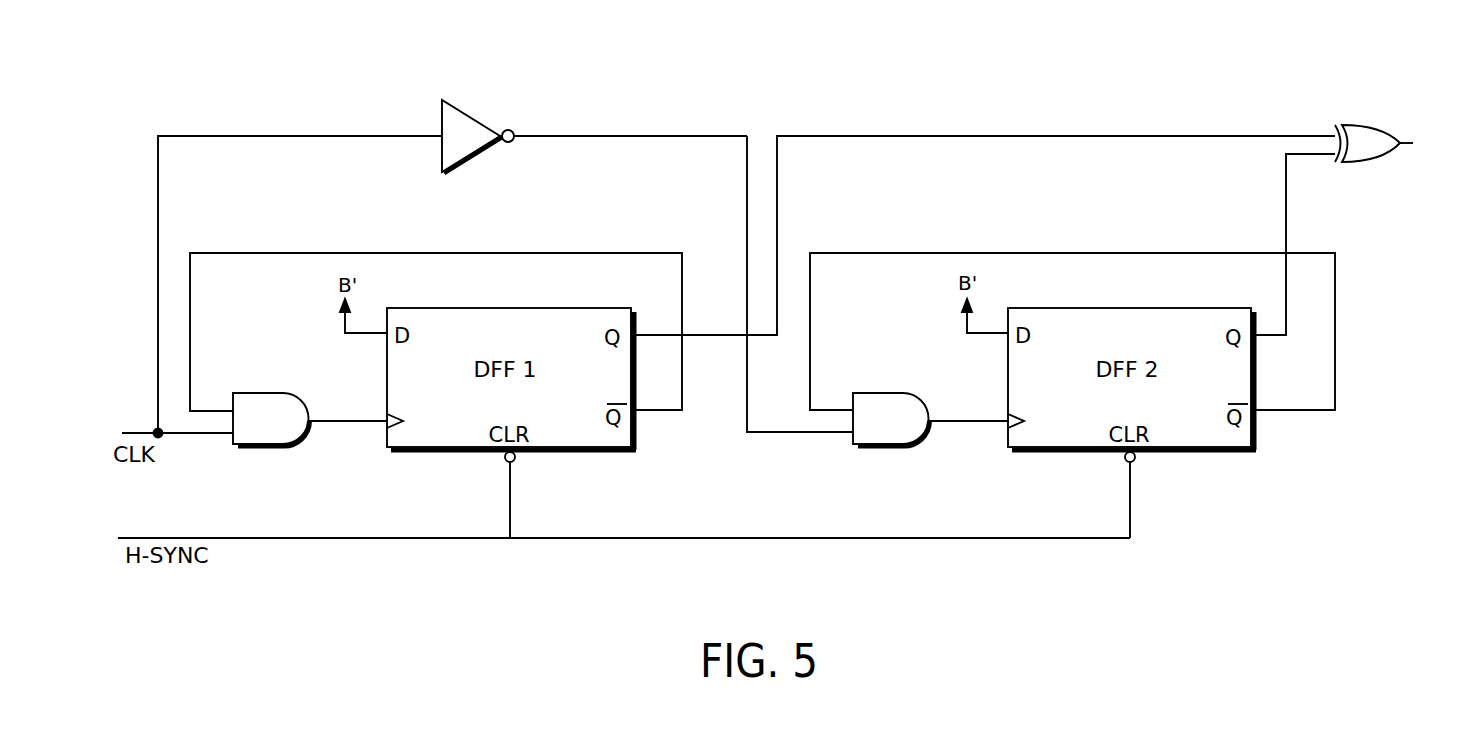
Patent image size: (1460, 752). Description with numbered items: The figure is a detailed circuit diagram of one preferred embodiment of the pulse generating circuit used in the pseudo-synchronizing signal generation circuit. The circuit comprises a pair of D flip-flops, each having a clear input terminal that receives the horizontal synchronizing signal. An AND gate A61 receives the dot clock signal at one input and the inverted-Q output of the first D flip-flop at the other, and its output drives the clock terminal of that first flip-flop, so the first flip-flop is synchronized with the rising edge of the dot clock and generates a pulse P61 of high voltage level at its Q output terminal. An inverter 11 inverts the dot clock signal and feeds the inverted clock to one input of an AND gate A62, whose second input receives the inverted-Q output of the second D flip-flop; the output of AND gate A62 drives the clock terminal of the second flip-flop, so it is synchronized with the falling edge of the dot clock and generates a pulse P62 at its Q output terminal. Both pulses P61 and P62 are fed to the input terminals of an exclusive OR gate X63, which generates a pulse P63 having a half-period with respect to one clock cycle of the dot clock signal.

The inverter 11 is at (467, 112).
The AND gate A61 is at (280, 393).
The AND gate A62 is at (886, 393).
The exclusive OR gate X63 is at (1356, 124).
The pulse P61 is at (983, 222).
The pulse P62 is at (1293, 244).
The pulse P63 is at (1415, 159).